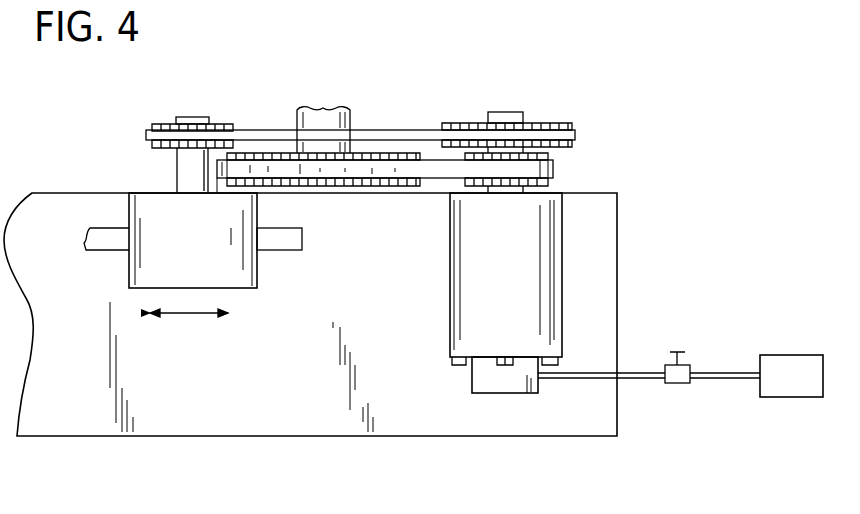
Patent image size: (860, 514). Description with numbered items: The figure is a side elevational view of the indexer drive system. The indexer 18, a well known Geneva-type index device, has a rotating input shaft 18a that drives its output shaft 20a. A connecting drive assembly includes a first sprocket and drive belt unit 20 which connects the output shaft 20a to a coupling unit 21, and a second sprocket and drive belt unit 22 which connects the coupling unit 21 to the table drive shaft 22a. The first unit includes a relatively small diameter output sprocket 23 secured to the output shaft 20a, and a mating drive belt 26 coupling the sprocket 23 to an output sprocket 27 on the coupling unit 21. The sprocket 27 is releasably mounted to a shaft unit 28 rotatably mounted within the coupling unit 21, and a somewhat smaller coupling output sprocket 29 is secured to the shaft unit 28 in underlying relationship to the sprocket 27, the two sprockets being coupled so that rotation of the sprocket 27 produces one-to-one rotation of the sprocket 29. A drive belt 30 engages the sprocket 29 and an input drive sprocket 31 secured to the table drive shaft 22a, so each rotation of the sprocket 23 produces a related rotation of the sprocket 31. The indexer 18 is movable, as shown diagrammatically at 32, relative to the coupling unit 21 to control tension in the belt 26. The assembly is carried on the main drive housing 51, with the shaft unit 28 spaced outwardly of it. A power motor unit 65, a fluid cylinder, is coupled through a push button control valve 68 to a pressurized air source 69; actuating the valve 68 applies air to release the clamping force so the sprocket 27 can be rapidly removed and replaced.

The indexer 18 is at (258, 288).
The input shaft 18a is at (278, 250).
The first sprocket and drive belt unit 20 is at (354, 111).
The output shaft 20a is at (186, 117).
The coupling unit 21 is at (448, 273).
The second sprocket and drive belt unit 22 is at (422, 196).
The table drive shaft 22a is at (323, 108).
The output sprocket 23 is at (154, 124).
The drive belt 26 is at (250, 133).
The output sprocket 27 is at (534, 123).
The shaft unit 28 is at (505, 106).
The coupling output sprocket 29 is at (548, 157).
The drive belt 30 is at (281, 170).
The input drive sprocket 31 is at (328, 184).
The indexer movement 32 is at (190, 314).
The main drive housing 51 is at (267, 423).
The power motor unit 65 is at (470, 375).
The push button control valve 68 is at (676, 383).
The pressurized air source 69 is at (792, 355).